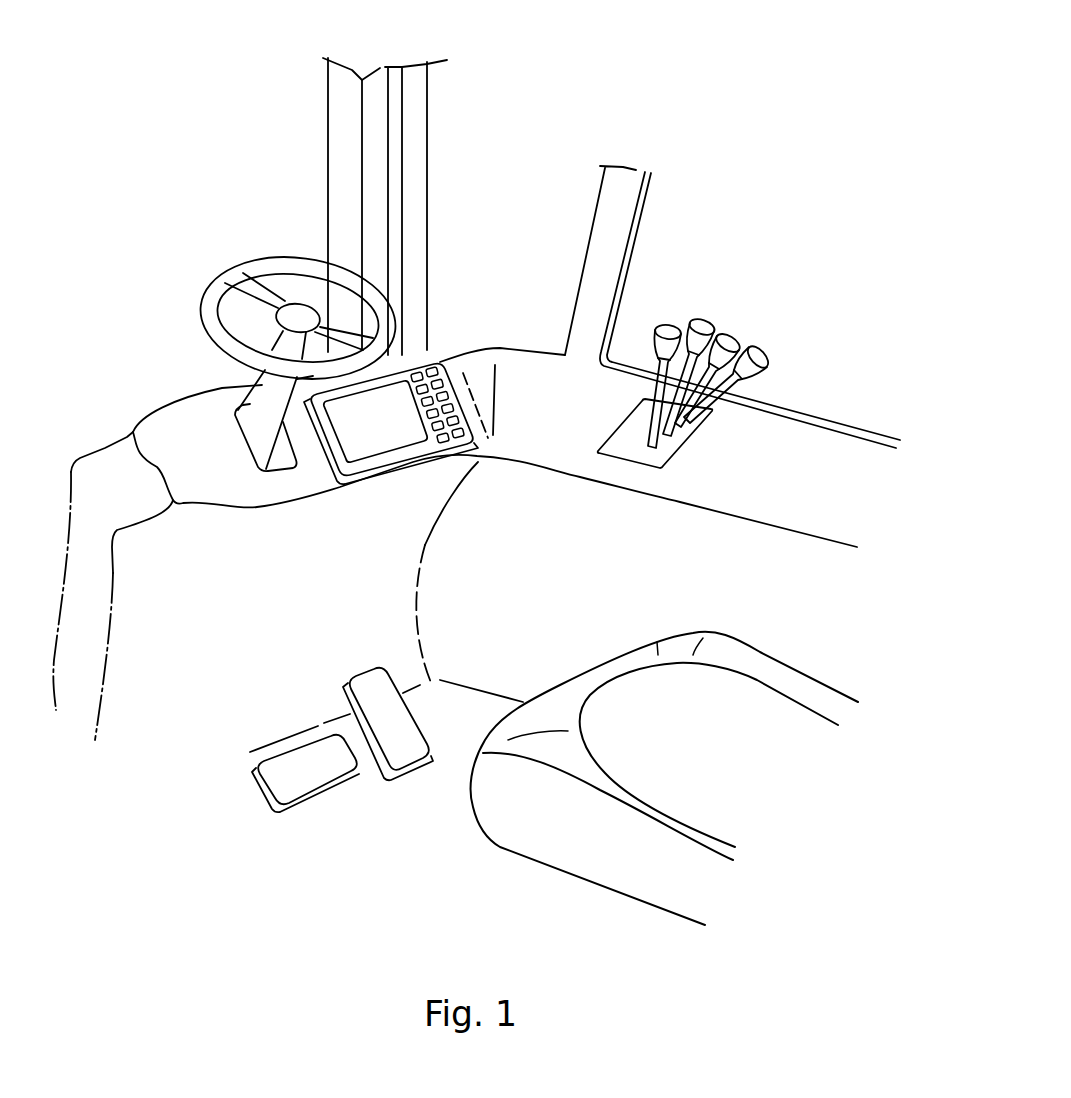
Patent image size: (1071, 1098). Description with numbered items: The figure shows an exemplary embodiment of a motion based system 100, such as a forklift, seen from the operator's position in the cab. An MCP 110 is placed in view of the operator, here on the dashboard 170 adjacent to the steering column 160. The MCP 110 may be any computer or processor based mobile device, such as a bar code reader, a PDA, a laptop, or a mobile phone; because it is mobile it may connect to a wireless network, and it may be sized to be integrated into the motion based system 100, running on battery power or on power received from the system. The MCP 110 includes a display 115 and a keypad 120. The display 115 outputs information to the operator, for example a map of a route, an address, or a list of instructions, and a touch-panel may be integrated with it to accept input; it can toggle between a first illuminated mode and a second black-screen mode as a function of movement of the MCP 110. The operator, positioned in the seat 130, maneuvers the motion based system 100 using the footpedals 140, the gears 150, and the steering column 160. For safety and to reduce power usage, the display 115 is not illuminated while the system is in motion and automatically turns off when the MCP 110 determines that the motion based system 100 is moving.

The motion based system 100 is at (540, 196).
The MCP 110 is at (419, 366).
The display 115 is at (375, 421).
The keypad 120 is at (445, 393).
The seat 130 is at (654, 650).
The footpedals 140 is at (357, 677).
The gears 150 is at (762, 353).
The steering column 160 is at (256, 263).
The dashboard 170 is at (195, 422).